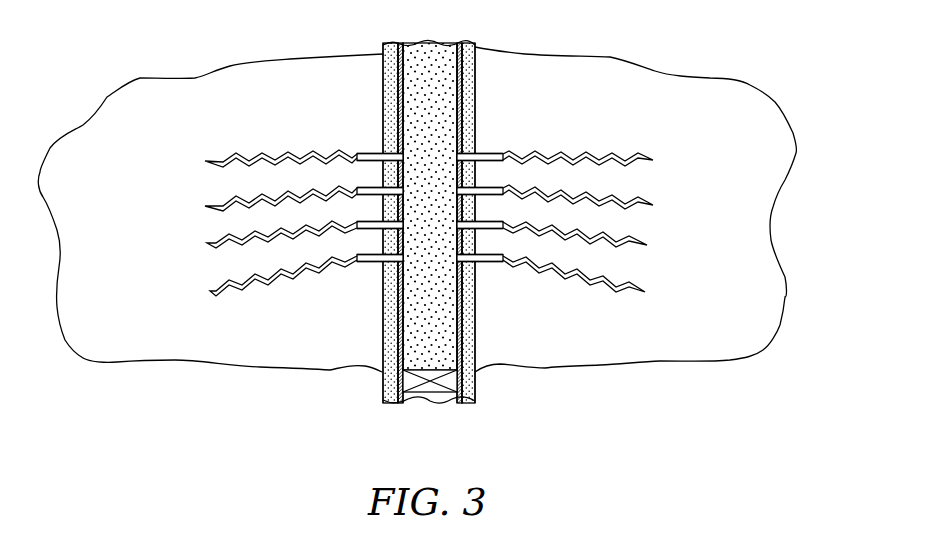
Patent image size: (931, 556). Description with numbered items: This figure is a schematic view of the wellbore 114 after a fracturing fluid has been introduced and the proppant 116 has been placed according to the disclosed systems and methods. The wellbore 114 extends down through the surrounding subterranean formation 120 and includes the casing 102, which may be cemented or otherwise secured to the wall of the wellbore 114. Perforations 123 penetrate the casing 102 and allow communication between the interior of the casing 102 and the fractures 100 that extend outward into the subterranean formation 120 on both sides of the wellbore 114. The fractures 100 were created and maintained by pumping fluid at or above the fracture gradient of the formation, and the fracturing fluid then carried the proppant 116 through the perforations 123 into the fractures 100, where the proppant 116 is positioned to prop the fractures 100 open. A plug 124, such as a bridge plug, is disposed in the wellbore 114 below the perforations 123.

The fractures 100 is at (205, 160).
The casing 102 is at (387, 58).
The wellbore 114 is at (388, 46).
The proppant 116 is at (443, 43).
The subterranean formation 120 is at (108, 175).
The perforations 123 is at (480, 190).
The plug 124 is at (428, 397).